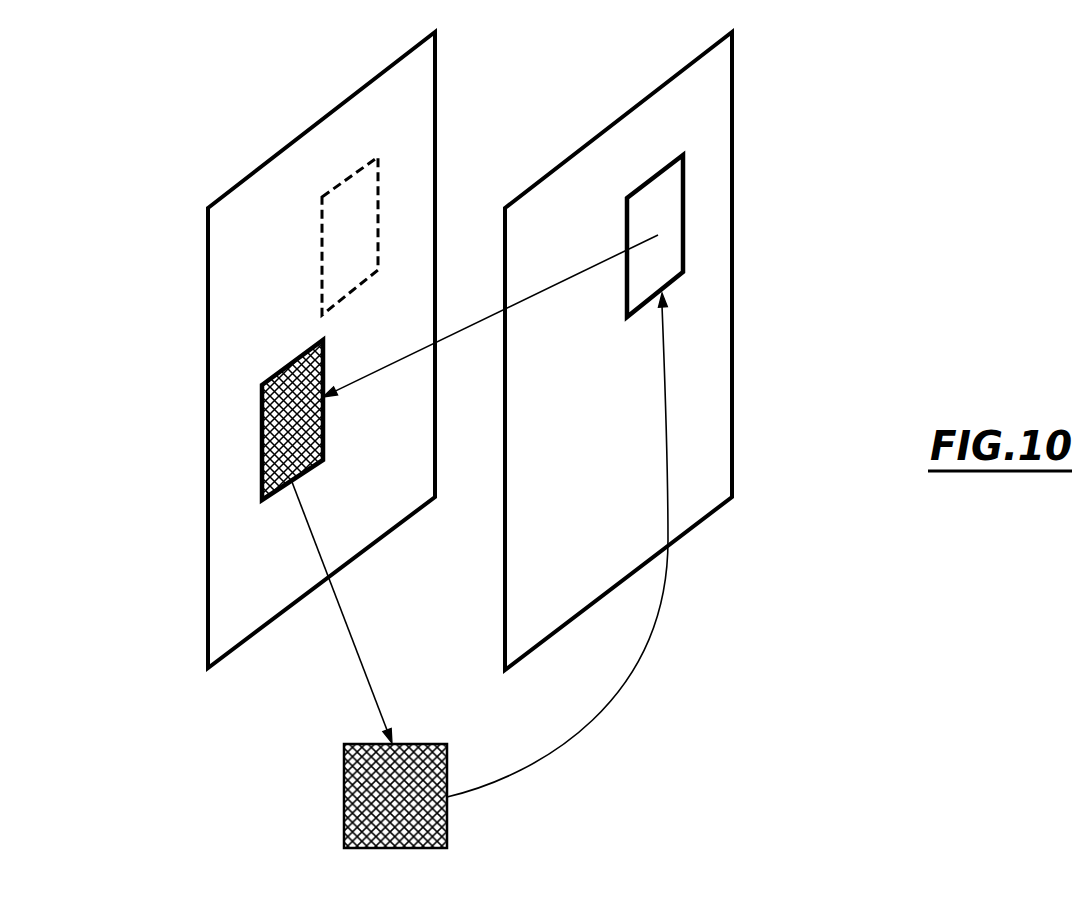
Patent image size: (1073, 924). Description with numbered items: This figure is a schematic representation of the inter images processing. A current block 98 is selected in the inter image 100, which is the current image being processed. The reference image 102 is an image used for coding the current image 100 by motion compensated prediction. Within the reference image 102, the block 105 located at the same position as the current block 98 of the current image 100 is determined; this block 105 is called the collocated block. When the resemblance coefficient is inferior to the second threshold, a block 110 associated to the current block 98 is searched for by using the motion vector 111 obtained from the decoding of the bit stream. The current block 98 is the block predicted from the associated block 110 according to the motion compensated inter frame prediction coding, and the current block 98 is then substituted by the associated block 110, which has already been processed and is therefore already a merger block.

The current block 98 is at (675, 198).
The inter image 100 is at (708, 527).
The reference image 102 is at (228, 180).
The collocated block 105 is at (350, 198).
The associated block 110 is at (263, 472).
The motion vector 111 is at (472, 323).